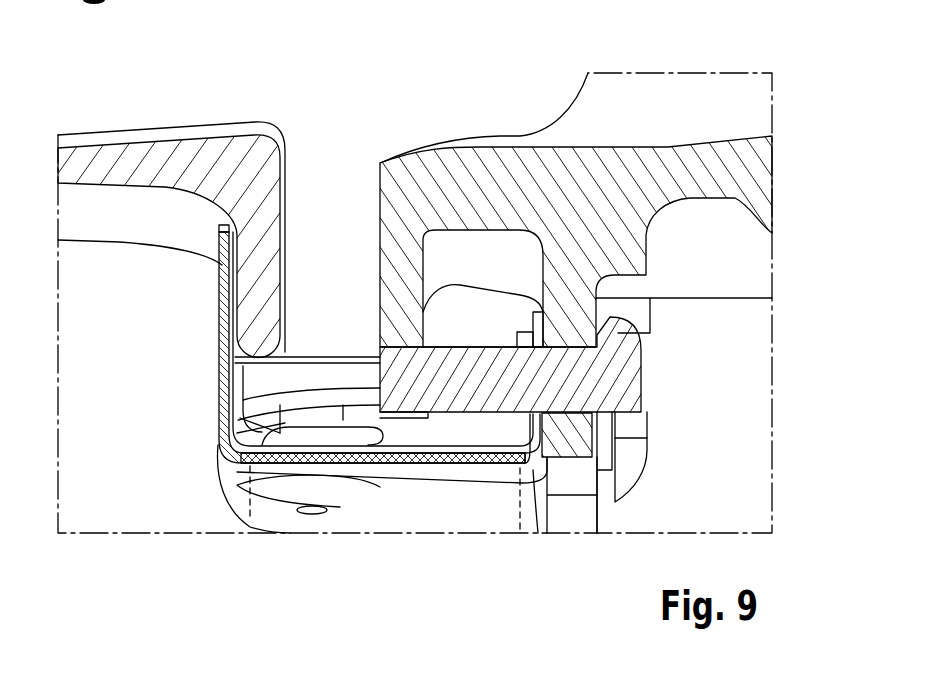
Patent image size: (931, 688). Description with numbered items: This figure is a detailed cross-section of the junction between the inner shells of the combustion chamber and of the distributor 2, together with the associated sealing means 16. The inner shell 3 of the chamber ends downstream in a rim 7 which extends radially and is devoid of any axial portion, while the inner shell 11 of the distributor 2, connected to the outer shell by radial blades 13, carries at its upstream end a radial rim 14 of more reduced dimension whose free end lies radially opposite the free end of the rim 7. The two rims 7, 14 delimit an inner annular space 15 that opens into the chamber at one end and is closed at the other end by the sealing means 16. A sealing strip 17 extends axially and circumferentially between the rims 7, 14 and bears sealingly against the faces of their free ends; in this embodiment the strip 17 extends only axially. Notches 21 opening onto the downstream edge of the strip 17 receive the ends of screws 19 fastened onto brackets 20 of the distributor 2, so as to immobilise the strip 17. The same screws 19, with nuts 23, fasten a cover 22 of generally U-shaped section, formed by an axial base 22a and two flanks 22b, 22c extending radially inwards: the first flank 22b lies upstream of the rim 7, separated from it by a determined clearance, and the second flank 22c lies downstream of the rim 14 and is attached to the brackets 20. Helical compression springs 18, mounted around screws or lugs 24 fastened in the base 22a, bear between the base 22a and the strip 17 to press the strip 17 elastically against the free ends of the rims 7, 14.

The distributor 2 is at (691, 304).
The inner shell 3 is at (168, 172).
The rim 7 is at (250, 230).
The inner shell 11 is at (698, 153).
The blades 13 is at (587, 120).
The radial rim 14 is at (380, 232).
The inner annular space 15 is at (323, 183).
The sealing means 16 is at (542, 554).
The sealing strip 17 is at (318, 357).
The helical compression springs 18 is at (303, 403).
The screws 19 is at (632, 378).
The brackets 20 is at (562, 450).
The notches 21 is at (378, 358).
The cover 22 is at (446, 540).
The base 22a is at (383, 515).
The first flank 22b is at (219, 328).
The second flank 22c is at (533, 313).
The nuts 23 is at (522, 420).
The screws or lugs 24 is at (290, 498).